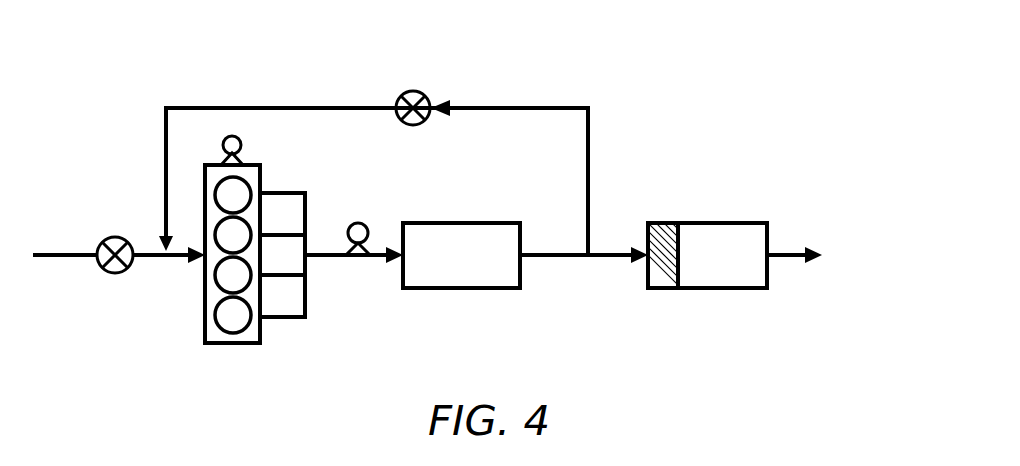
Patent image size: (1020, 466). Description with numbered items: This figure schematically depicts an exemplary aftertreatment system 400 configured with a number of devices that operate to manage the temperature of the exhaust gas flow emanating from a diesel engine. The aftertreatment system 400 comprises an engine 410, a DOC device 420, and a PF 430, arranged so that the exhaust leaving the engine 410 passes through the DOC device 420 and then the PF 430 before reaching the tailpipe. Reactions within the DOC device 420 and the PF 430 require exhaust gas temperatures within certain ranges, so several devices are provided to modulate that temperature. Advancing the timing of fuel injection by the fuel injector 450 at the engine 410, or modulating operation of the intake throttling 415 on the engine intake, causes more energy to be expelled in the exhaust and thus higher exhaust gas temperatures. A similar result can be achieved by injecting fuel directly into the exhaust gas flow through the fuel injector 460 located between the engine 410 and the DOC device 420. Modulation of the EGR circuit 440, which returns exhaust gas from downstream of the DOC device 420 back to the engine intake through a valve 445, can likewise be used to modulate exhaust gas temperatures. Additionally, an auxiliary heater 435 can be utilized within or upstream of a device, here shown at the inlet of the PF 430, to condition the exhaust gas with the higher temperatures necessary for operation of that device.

The aftertreatment system 400 is at (132, 77).
The engine 410 is at (260, 329).
The intake throttling 415 is at (100, 246).
The DOC device 420 is at (507, 276).
The PF 430 is at (752, 275).
The auxiliary heater 435 is at (664, 223).
The EGR circuit 440 is at (542, 106).
The EGR valve 445 is at (427, 115).
The fuel injector 450 is at (231, 137).
The fuel injector 460 is at (362, 226).